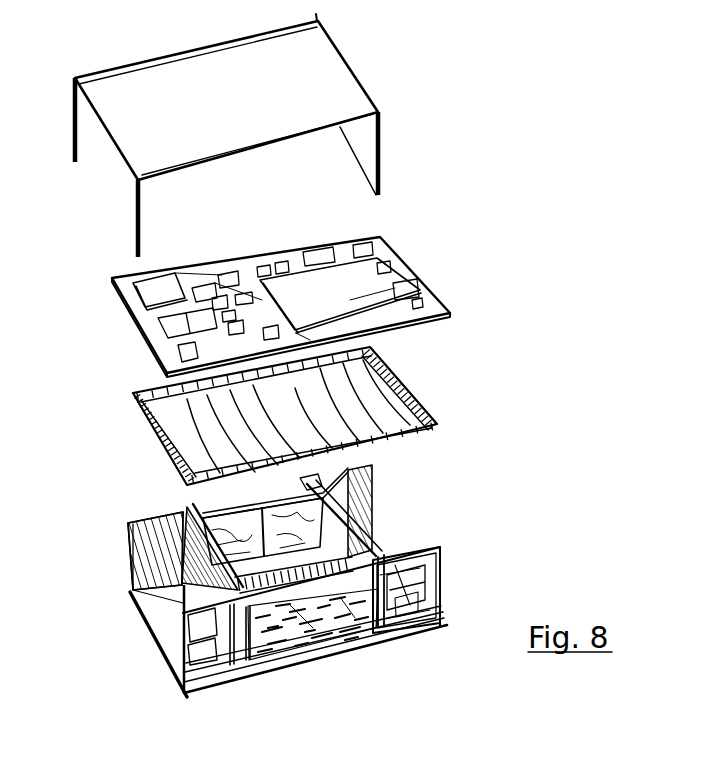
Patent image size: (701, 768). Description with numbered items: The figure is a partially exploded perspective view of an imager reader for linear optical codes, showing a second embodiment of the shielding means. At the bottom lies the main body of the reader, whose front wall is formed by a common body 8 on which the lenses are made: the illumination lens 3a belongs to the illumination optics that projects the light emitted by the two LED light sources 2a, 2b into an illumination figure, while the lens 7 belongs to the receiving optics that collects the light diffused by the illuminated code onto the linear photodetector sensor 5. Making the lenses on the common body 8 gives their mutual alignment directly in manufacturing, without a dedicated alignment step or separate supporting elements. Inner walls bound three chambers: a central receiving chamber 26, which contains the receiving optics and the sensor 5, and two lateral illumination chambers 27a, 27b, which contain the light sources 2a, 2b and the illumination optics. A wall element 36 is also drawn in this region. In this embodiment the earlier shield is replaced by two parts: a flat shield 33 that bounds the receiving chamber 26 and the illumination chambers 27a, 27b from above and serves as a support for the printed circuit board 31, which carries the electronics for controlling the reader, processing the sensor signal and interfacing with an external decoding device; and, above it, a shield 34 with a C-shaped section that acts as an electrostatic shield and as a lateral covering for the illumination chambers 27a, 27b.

The shield 34 is at (338, 90).
The printed circuit board 31 is at (432, 297).
The flat shield 33 is at (410, 390).
The lens of the receiving optics 7 is at (250, 500).
The common body 8 is at (125, 510).
The side wall of frame 36 is at (378, 467).
The central receiving chamber 26 is at (333, 542).
The lens 3a is at (128, 548).
The lateral illumination chamber 27a is at (412, 543).
The LED light source 2b is at (443, 583).
The lateral illumination chamber 27b is at (170, 603).
The LED light source 2a is at (207, 657).
The sensor 5 is at (323, 622).